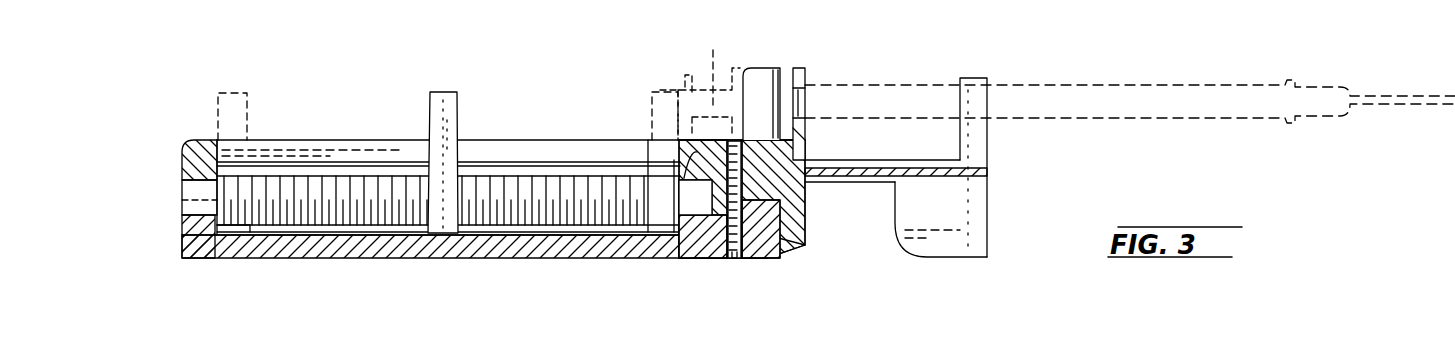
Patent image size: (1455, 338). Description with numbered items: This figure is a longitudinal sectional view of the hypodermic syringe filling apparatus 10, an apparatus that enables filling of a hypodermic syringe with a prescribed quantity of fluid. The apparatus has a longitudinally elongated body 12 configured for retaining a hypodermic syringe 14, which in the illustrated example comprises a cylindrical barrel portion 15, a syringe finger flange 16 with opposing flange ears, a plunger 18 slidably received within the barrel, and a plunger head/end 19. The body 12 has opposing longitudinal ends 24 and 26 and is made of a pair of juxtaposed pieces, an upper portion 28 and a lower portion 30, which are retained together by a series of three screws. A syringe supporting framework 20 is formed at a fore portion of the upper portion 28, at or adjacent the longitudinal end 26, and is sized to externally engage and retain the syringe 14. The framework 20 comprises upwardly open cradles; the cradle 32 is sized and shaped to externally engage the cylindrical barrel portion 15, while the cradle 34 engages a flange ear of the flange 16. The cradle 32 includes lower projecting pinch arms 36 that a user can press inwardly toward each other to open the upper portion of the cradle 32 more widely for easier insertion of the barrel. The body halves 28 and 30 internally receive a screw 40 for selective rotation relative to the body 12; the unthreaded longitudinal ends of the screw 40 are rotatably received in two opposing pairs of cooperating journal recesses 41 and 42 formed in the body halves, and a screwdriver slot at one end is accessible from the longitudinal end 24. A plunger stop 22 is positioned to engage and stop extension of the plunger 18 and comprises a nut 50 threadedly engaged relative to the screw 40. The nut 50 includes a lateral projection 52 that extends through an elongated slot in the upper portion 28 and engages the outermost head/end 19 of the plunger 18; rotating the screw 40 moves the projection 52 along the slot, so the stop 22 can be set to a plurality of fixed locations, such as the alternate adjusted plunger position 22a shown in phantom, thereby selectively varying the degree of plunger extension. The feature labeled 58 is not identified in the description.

The hypodermic syringe filling apparatus 10 is at (1050, 42).
The longitudinally elongated body 12 is at (557, 137).
The hypodermic syringe 14 is at (1213, 79).
The cylindrical barrel portion 15 is at (1150, 103).
The syringe finger flange 16 is at (740, 68).
The plunger 18 is at (719, 61).
The plunger head/end 19 is at (685, 75).
The syringe supporting framework 20 is at (880, 59).
The plunger stop 22 is at (440, 84).
The alternate adjusted plunger position 22a is at (268, 108).
The longitudinal end 24 is at (158, 249).
The longitudinal end 26 is at (1012, 229).
The upper portion 28 is at (207, 138).
The lower portion 30 is at (207, 248).
The cradle 32 is at (980, 133).
The cradle 34 is at (775, 68).
The pinch arms 36 is at (947, 243).
The screw 40 is at (507, 185).
The journal recesses 41 is at (180, 176).
The journal recesses 42 is at (679, 150).
The nut 50 is at (442, 222).
The lateral projection 52 is at (442, 118).
The drive rod 58 is at (325, 150).